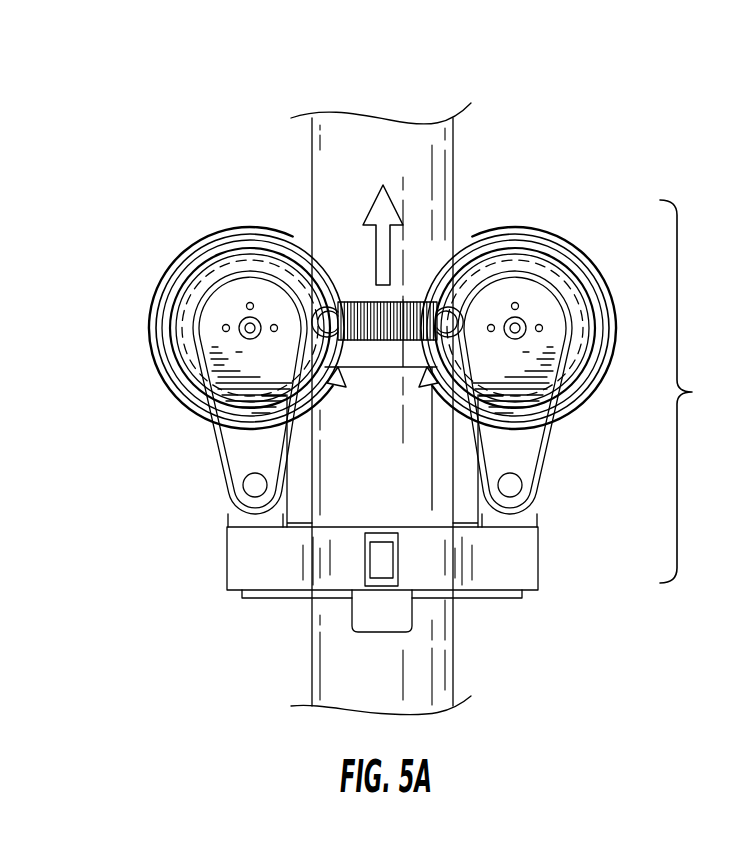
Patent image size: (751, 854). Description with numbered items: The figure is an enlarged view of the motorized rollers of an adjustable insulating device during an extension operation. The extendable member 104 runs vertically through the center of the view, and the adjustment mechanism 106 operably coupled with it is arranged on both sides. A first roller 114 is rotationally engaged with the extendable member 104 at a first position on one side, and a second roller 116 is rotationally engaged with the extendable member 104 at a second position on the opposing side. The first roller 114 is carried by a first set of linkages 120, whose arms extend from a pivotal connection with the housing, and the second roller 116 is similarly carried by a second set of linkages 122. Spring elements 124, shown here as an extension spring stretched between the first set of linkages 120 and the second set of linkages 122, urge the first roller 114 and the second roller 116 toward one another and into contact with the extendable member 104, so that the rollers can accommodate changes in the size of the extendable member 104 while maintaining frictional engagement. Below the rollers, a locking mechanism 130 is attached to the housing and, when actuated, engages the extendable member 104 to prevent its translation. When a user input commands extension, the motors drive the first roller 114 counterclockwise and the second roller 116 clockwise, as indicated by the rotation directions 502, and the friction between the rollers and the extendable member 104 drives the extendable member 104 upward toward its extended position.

The extendable member 104 is at (338, 152).
The adjustment mechanism 106 is at (698, 391).
The first roller 114 is at (180, 285).
The second roller 116 is at (562, 267).
The first set of linkages 120 is at (220, 453).
The second set of linkages 122 is at (552, 442).
The spring elements 124 is at (355, 300).
The locking mechanism 130 is at (427, 558).
The rotation directions 502 is at (155, 370).